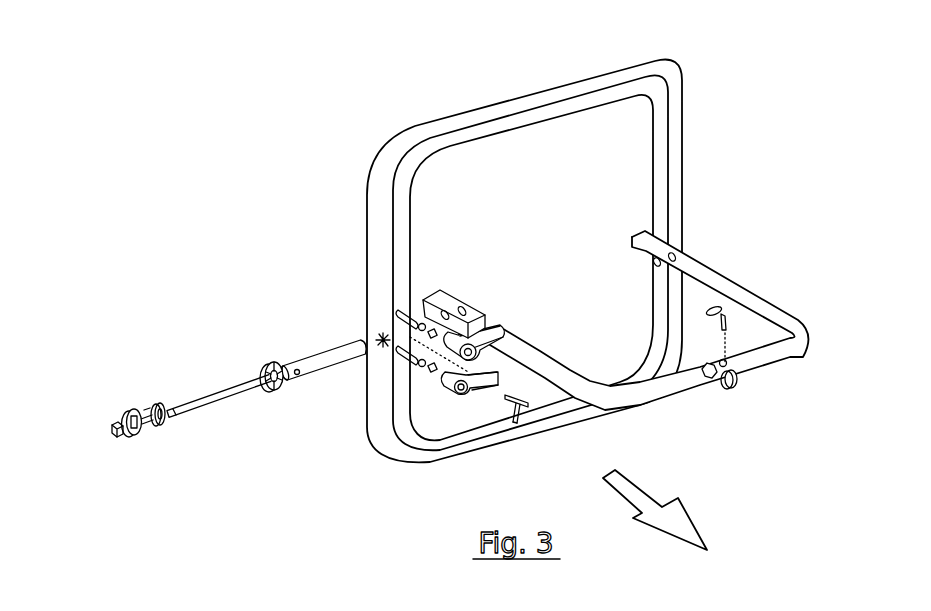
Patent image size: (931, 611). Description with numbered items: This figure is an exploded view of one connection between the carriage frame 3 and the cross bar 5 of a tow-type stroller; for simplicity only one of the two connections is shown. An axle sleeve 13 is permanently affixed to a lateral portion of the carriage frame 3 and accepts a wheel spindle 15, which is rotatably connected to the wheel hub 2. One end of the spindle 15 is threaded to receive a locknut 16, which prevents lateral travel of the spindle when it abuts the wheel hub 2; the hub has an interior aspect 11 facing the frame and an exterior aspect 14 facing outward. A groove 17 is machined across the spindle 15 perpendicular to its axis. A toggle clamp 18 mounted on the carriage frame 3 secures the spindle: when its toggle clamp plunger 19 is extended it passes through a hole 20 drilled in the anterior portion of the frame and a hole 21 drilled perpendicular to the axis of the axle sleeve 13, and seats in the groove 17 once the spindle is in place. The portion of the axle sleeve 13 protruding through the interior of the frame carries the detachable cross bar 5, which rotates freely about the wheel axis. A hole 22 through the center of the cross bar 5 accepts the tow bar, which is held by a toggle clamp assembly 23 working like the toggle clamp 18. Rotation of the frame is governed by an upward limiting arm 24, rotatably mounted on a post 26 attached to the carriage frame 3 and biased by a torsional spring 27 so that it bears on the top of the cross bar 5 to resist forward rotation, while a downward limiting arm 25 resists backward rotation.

The wheel hub 2 is at (137, 403).
The carriage frame 3 is at (641, 66).
The cross bar 5 is at (669, 410).
The interior aspect of the hub 11 is at (170, 420).
The axle sleeve 13 is at (312, 357).
The exterior aspect of the hub 14 is at (126, 438).
The wheel spindle 15 is at (238, 390).
The locknut 16 is at (110, 431).
The groove 17 is at (210, 398).
The toggle clamp 18 is at (518, 404).
The toggle clamp plunger 19 is at (507, 401).
The hole 20 is at (395, 335).
The hole 21 is at (298, 373).
The hole 22 is at (732, 385).
The toggle clamp assembly 23 is at (718, 314).
The upward limiting arm 24 is at (486, 331).
The downward limiting arm 25 is at (455, 392).
The post 26 is at (407, 305).
The torsional spring 27 is at (427, 372).